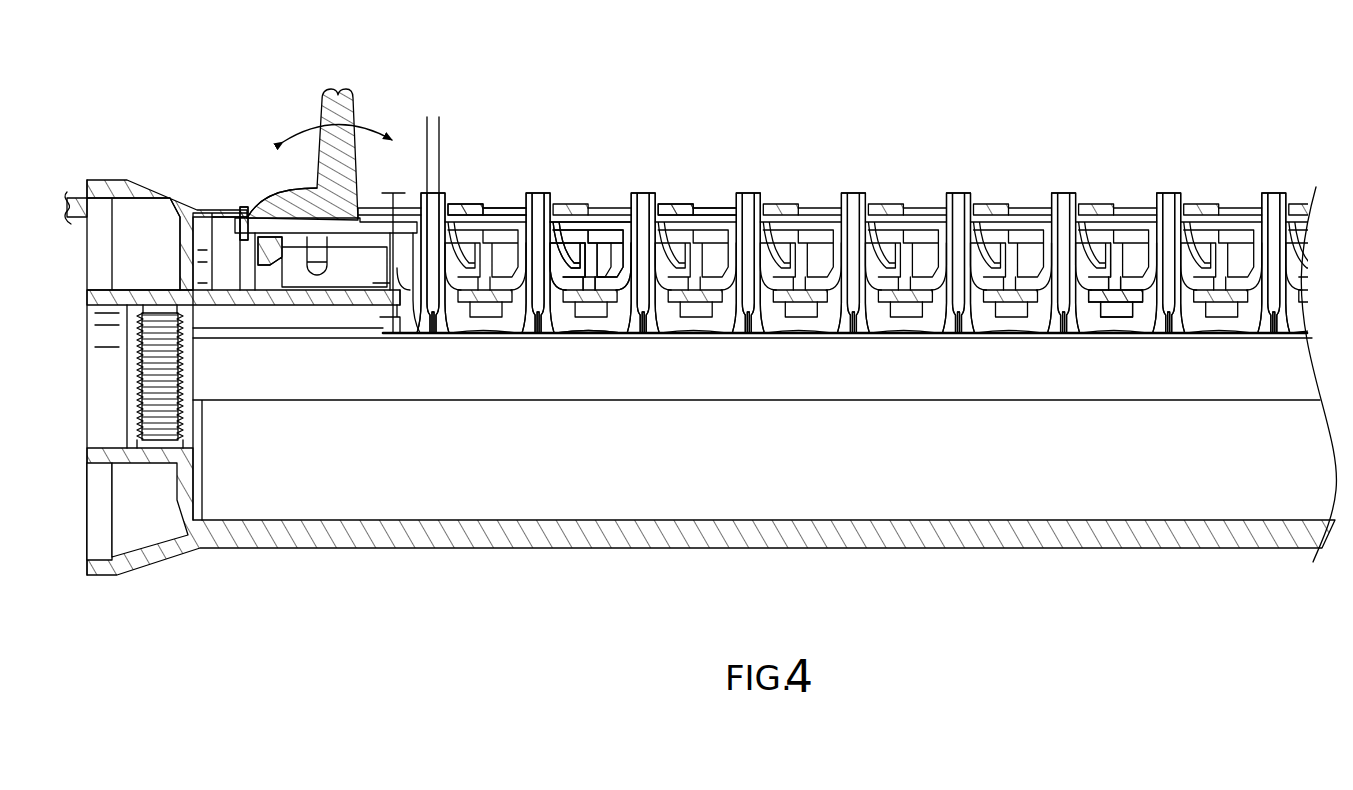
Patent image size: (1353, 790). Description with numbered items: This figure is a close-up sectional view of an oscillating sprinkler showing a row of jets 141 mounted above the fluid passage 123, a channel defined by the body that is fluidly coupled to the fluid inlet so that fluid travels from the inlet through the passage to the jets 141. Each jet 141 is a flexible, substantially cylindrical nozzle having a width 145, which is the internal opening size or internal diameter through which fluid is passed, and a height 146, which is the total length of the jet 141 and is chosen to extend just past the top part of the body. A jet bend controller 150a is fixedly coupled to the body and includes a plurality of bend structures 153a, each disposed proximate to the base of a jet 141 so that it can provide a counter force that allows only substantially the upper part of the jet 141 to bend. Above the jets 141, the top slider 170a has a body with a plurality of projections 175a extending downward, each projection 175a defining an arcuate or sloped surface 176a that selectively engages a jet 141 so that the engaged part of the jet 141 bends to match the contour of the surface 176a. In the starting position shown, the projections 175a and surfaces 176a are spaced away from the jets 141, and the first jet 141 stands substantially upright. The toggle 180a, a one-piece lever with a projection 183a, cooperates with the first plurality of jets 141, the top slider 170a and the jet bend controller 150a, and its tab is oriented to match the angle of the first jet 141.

The fluid passage 123 is at (935, 457).
The jet 141 is at (437, 193).
The width 145 is at (466, 152).
The height 146 is at (385, 238).
The jet bend controller 150a is at (1128, 283).
The bend structure 153a is at (1142, 283).
The top slider 170a is at (500, 228).
The projection 175a is at (584, 290).
The surface 176a is at (578, 255).
The toggle 180a is at (335, 92).
The projection 183a is at (317, 275).